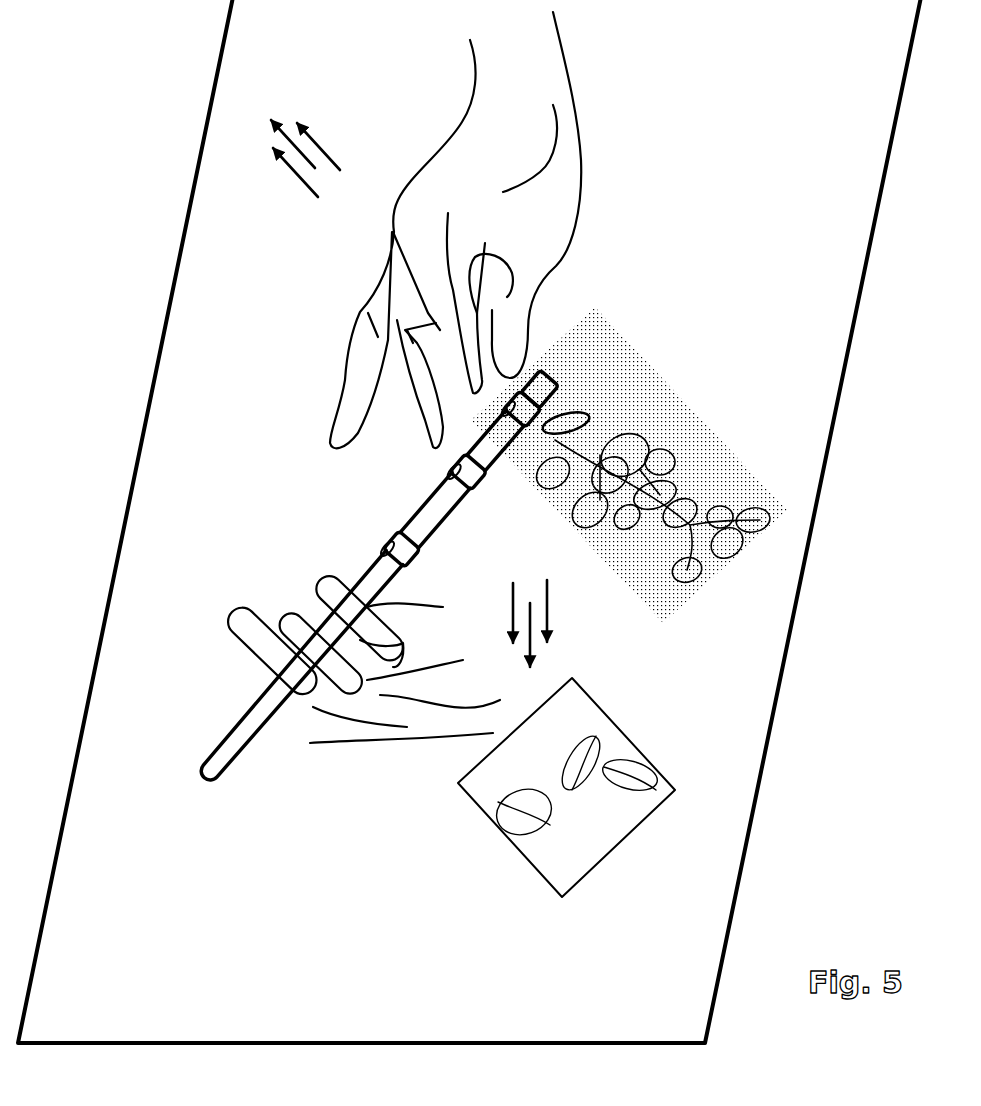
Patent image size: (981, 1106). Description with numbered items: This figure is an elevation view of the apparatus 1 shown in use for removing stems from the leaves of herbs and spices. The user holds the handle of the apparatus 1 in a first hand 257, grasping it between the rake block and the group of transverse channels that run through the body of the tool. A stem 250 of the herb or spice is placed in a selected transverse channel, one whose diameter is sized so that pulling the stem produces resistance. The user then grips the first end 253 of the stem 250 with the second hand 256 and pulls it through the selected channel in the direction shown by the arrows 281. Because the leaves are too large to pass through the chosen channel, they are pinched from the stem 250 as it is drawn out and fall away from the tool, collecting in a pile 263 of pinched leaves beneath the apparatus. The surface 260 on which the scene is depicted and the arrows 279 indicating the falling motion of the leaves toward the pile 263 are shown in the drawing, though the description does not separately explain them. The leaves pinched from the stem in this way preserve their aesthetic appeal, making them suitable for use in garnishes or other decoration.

The apparatus 1 is at (418, 567).
The stem 250 is at (553, 410).
The first end of the stem 253 is at (518, 410).
The second hand 256 is at (503, 230).
The first hand 257 is at (252, 632).
The substrate sheet 260 is at (182, 272).
The pile of pinched leaves 263 is at (620, 847).
The downward movement arrows 279 is at (547, 623).
The arrows 281 is at (293, 178).